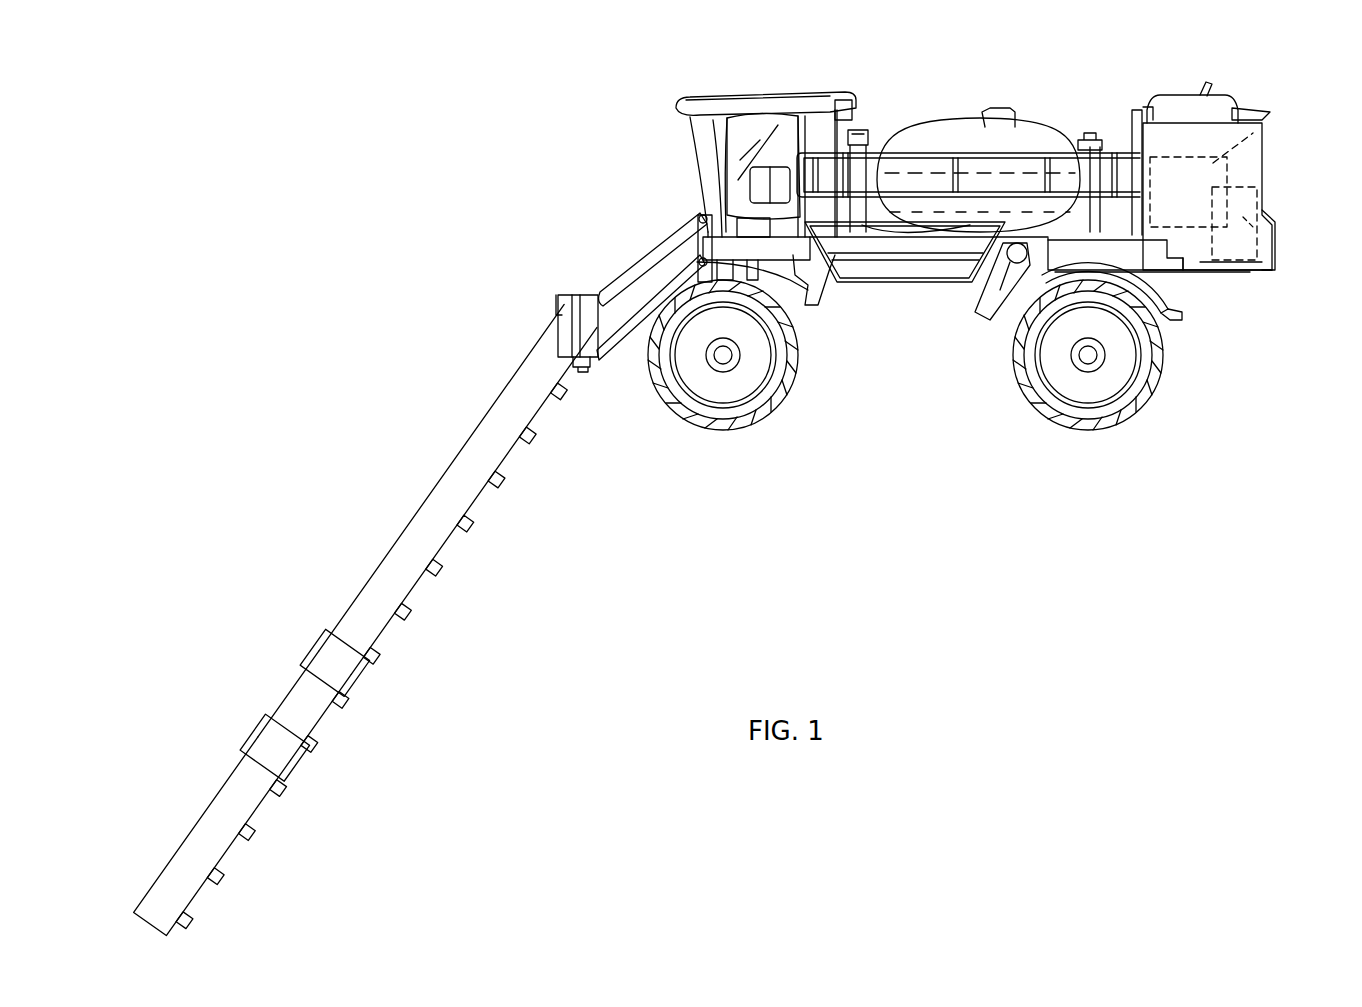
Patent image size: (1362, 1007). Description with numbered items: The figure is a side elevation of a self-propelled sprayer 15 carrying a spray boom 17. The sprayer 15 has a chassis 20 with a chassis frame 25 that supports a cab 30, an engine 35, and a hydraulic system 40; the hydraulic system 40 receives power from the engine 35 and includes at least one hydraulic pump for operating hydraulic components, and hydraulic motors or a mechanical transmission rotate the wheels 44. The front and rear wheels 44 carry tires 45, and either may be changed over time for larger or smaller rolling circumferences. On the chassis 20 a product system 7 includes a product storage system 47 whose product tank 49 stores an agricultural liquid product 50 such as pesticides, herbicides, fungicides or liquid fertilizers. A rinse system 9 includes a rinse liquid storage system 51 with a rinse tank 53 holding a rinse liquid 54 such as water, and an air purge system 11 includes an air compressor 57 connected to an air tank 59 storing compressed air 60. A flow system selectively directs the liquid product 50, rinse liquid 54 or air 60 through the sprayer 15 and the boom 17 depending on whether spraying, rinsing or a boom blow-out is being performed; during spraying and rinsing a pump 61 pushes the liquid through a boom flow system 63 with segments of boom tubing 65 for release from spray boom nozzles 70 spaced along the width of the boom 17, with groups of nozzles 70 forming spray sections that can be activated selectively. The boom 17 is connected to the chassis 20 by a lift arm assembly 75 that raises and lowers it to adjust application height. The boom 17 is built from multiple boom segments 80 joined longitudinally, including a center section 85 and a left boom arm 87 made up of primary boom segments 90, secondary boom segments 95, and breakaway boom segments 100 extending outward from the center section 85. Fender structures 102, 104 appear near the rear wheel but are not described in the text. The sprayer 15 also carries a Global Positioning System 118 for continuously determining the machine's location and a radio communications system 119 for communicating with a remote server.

The product system 7 is at (892, 64).
The rinse system 9 is at (1085, 68).
The air purge system 11 is at (1243, 278).
The self-propelled sprayer 15 is at (1013, 68).
The spray boom 17 is at (437, 533).
The chassis 20 is at (925, 290).
The chassis frame 25 is at (1000, 292).
The cab 30 is at (755, 98).
The engine 35 is at (1267, 130).
The hydraulic system 40 is at (1165, 200).
The wheels 44 is at (753, 373).
The tires 45 is at (770, 418).
The product storage system 47 is at (1022, 100).
The product tank 49 is at (940, 112).
The agricultural liquid product 50 is at (908, 172).
The rinse liquid storage system 51 is at (1100, 115).
The rinse tank 53 is at (1092, 128).
The rinse liquid 54 is at (1135, 282).
The air compressor 57 is at (1222, 280).
The air tank 59 is at (1275, 258).
The air 60 is at (1272, 212).
The pump 61 is at (1017, 305).
The boom flow system 63 is at (559, 391).
The boom tubing 65 is at (527, 435).
The spray boom nozzles 70 is at (481, 501).
The lift arm assembly 75 is at (664, 233).
The boom segments 80 is at (378, 448).
The center section 85 is at (573, 275).
The left boom arm 87 is at (231, 854).
The primary boom segments 90 is at (453, 499).
The secondary boom segments 95 is at (300, 715).
The breakaway boom segments 100 is at (217, 840).
The rear fender 102 is at (1177, 318).
The fender inner wall 104 is at (1158, 305).
The Global Positioning System (GPS) 118 is at (1230, 78).
The radio communications system 119 is at (822, 82).